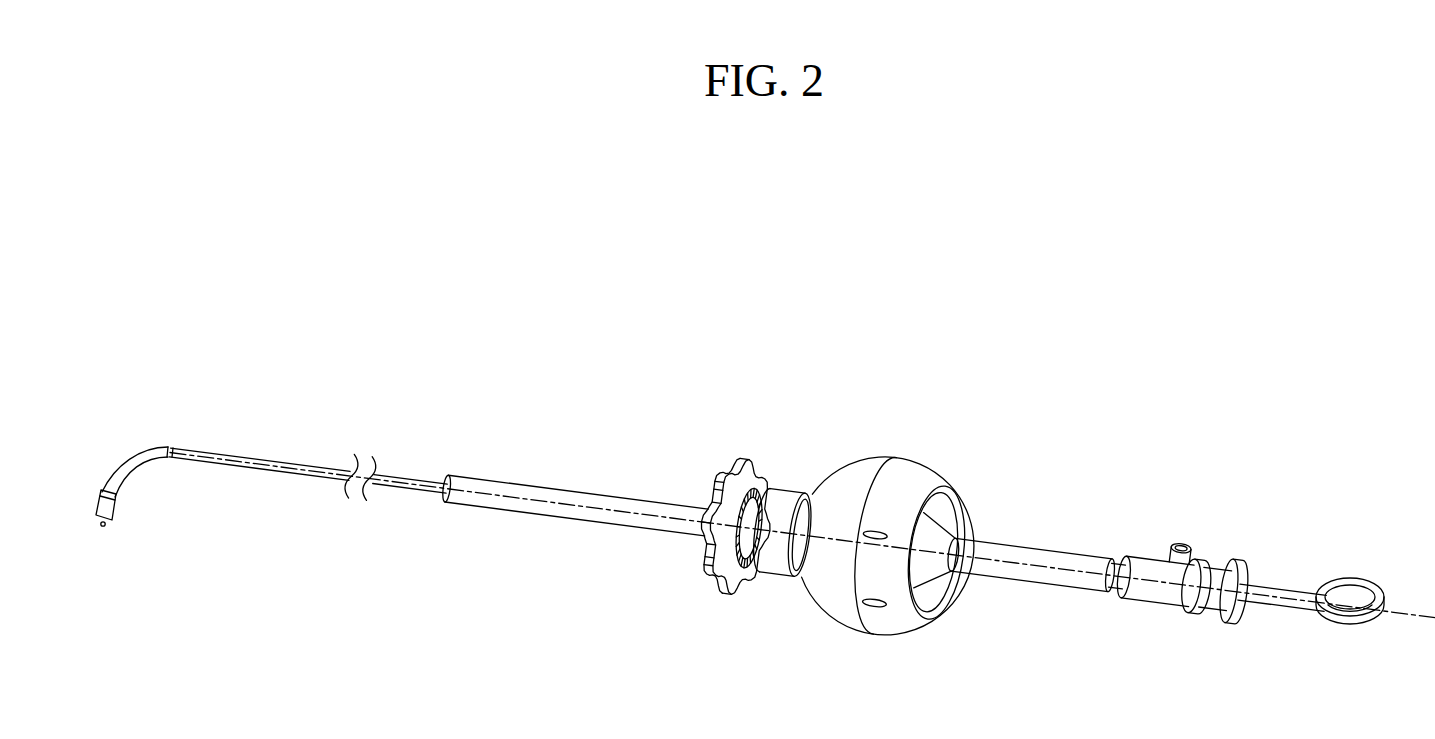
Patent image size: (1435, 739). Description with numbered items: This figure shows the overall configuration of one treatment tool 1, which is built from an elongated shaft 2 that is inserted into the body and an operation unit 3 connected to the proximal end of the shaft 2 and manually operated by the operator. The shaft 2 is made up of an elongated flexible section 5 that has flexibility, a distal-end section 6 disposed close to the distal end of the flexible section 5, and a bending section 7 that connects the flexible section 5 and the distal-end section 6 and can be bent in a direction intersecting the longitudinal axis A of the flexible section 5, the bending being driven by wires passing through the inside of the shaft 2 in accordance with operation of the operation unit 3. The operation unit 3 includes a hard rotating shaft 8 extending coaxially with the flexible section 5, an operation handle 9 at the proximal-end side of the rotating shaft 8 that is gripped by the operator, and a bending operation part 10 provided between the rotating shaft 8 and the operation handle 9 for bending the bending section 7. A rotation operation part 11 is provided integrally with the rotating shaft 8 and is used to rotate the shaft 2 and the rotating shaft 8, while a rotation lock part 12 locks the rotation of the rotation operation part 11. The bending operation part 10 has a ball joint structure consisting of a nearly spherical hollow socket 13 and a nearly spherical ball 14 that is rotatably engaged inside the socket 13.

The treatment tool 1 is at (325, 243).
The shaft 2 is at (160, 382).
The operation unit 3 is at (1176, 475).
The flexible section 5 is at (253, 457).
The distal-end section 6 is at (117, 508).
The bending section 7 is at (127, 457).
The rotating shaft 8 is at (548, 483).
The operation handle 9 is at (1272, 607).
The bending operation part 10 is at (965, 430).
The rotation operation part 11 is at (737, 460).
The rotation lock part 12 is at (782, 487).
The socket 13 is at (900, 470).
The ball 14 is at (953, 513).
The longitudinal axis A is at (403, 482).